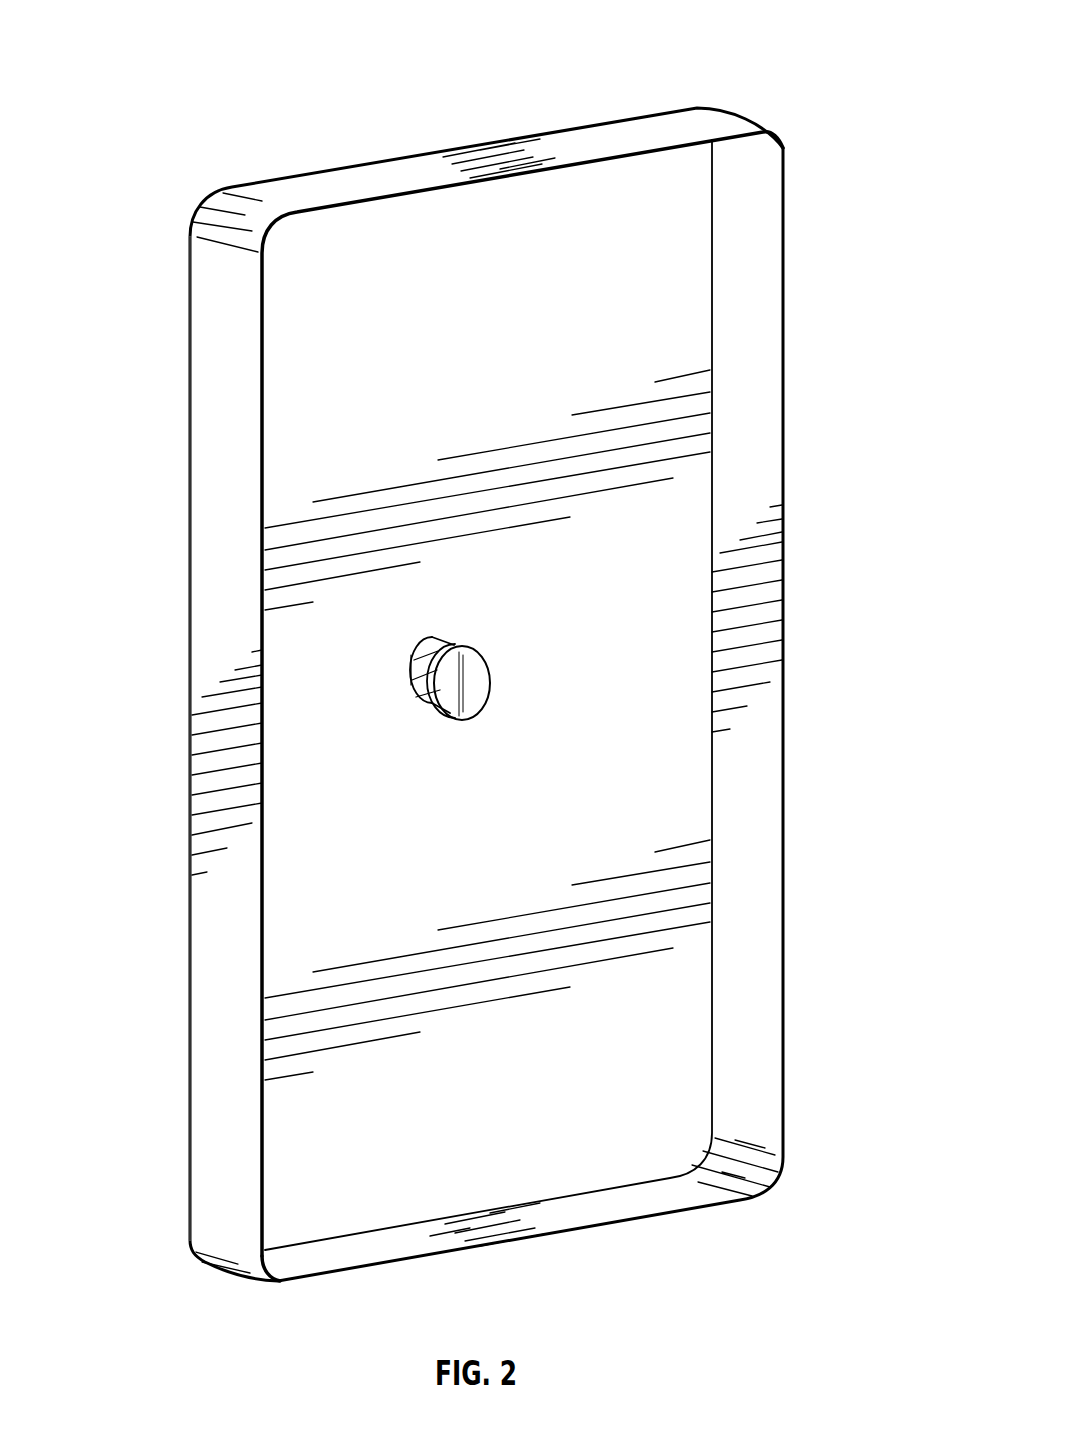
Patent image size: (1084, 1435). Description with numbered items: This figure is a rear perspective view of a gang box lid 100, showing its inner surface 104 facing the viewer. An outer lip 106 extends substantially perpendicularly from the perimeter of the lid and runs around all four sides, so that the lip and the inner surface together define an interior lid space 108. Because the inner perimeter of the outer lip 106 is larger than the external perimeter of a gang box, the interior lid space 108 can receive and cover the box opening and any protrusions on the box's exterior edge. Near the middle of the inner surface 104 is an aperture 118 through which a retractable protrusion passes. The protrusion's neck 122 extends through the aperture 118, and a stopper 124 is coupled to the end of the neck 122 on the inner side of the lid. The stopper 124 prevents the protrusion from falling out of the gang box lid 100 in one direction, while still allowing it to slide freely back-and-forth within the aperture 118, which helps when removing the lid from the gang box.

The gang box lid 100 is at (795, 60).
The inner surface 104 is at (529, 375).
The outer lip 106 is at (783, 836).
The interior lid space 108 is at (663, 430).
The aperture 118 is at (408, 692).
The neck 122 is at (417, 668).
The stopper 124 is at (477, 677).